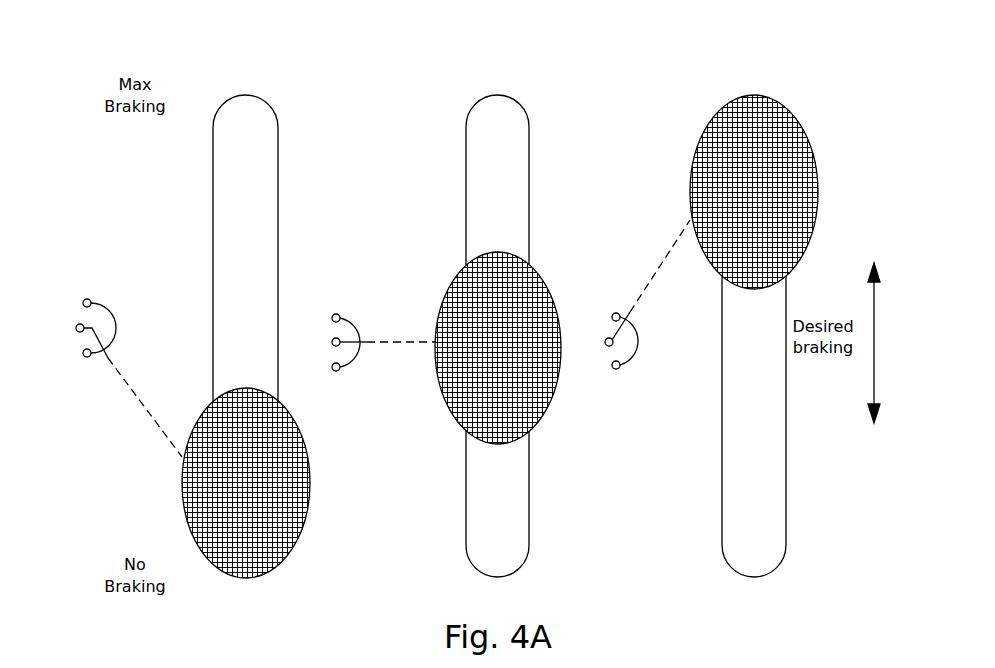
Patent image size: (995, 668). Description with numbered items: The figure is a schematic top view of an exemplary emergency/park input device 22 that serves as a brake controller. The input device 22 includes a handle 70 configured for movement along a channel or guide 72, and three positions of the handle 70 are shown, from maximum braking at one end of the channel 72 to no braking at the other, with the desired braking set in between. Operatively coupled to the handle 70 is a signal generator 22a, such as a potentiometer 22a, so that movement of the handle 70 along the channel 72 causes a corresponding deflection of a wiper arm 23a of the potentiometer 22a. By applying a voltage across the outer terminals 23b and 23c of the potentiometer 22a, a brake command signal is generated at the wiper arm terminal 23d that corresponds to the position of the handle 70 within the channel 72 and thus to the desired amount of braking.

The emergency/park input device 22 is at (517, 317).
The signal generator 22a is at (373, 338).
The wiper arm 23a is at (107, 358).
The outer terminal 23b is at (87, 299).
The outer terminal 23c is at (85, 357).
The wiper arm terminal 23d is at (76, 328).
The handle 70 is at (310, 502).
The channel 72 is at (270, 208).